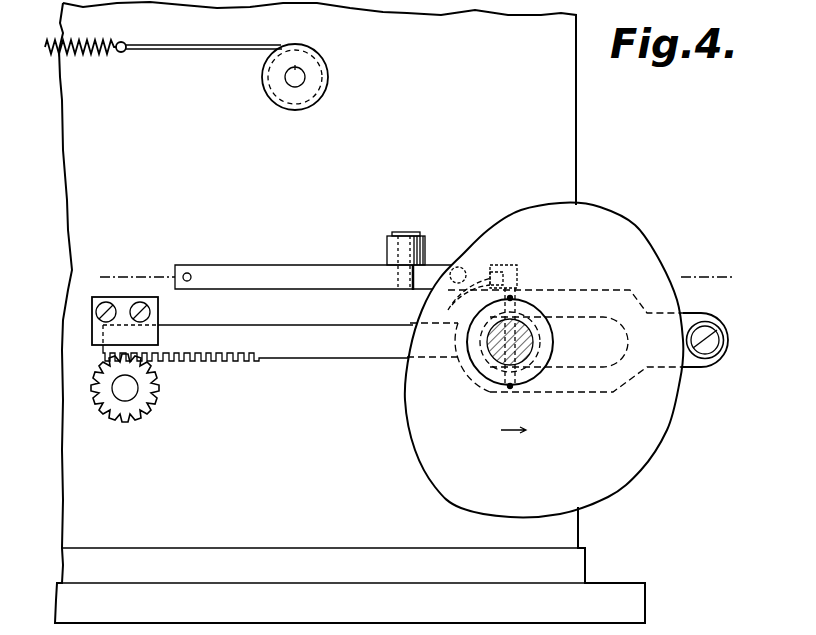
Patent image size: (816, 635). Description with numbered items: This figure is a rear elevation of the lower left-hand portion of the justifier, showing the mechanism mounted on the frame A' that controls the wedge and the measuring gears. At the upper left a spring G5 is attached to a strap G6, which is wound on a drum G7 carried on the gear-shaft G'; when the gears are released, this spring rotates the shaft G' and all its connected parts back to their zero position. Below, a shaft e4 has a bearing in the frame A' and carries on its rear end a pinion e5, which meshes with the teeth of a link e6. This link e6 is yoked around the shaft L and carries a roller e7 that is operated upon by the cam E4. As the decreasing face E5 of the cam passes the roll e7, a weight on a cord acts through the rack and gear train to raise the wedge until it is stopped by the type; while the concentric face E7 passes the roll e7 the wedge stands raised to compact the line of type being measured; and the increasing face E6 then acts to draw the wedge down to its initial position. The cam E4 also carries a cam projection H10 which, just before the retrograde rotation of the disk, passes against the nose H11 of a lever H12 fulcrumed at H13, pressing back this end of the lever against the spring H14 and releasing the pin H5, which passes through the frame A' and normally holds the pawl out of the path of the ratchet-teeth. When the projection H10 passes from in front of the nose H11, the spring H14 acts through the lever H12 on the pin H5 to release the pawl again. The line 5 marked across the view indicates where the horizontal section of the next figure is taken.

The frame A' is at (350, 312).
The spring G5 is at (106, 53).
The strap G6 is at (218, 53).
The drum G7 is at (328, 85).
The gear-shaft G' is at (287, 102).
The section line 5 5 is at (416, 276).
The lever H12 is at (313, 277).
The pin H5 is at (201, 257).
The fulcrum H13 is at (388, 261).
The spring H14 is at (463, 267).
The cam projection H10 is at (491, 277).
The nose H11 is at (520, 280).
The cam E4 is at (544, 360).
The decreasing face E5 is at (410, 446).
The increasing face E6 is at (536, 215).
The concentric face E7 is at (423, 300).
The shaft L is at (494, 366).
The roller e7 is at (707, 360).
The link e6 is at (252, 329).
The pinion e5 is at (134, 389).
The shaft e4 is at (122, 396).